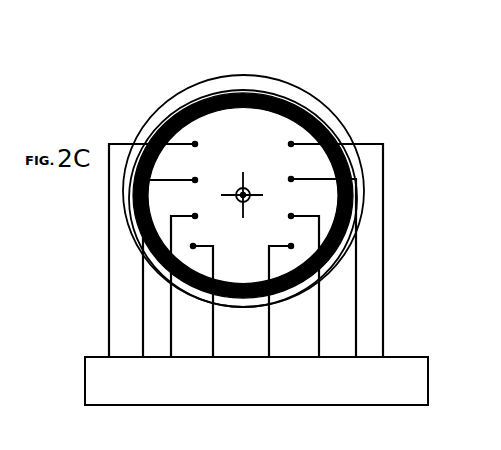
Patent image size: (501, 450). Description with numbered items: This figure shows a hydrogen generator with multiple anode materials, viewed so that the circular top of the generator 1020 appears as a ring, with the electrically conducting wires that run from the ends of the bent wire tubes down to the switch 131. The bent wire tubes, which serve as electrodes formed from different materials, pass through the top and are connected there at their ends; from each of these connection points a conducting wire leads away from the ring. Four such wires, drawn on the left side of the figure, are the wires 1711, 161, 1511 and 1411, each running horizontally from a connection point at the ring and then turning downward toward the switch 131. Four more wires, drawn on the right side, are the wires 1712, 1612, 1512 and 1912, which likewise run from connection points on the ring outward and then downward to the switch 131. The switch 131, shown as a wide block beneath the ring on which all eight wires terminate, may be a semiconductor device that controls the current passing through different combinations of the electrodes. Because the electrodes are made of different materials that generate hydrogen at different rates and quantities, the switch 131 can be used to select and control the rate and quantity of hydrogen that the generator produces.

The stator ring assembly 1020 is at (148, 97).
The switch 131 is at (413, 380).
The first lead wire (171-1) 1711 is at (108, 293).
The lead wire 161 is at (148, 308).
The lead wire 151-1 1511 is at (172, 312).
The lead wire 141-1 1411 is at (218, 322).
The lead wire 171-2 1712 is at (275, 316).
The lead wire 161-2 1612 is at (325, 290).
The lead wire 151-2 1512 is at (363, 272).
The lead wire 191-2 1912 is at (387, 232).